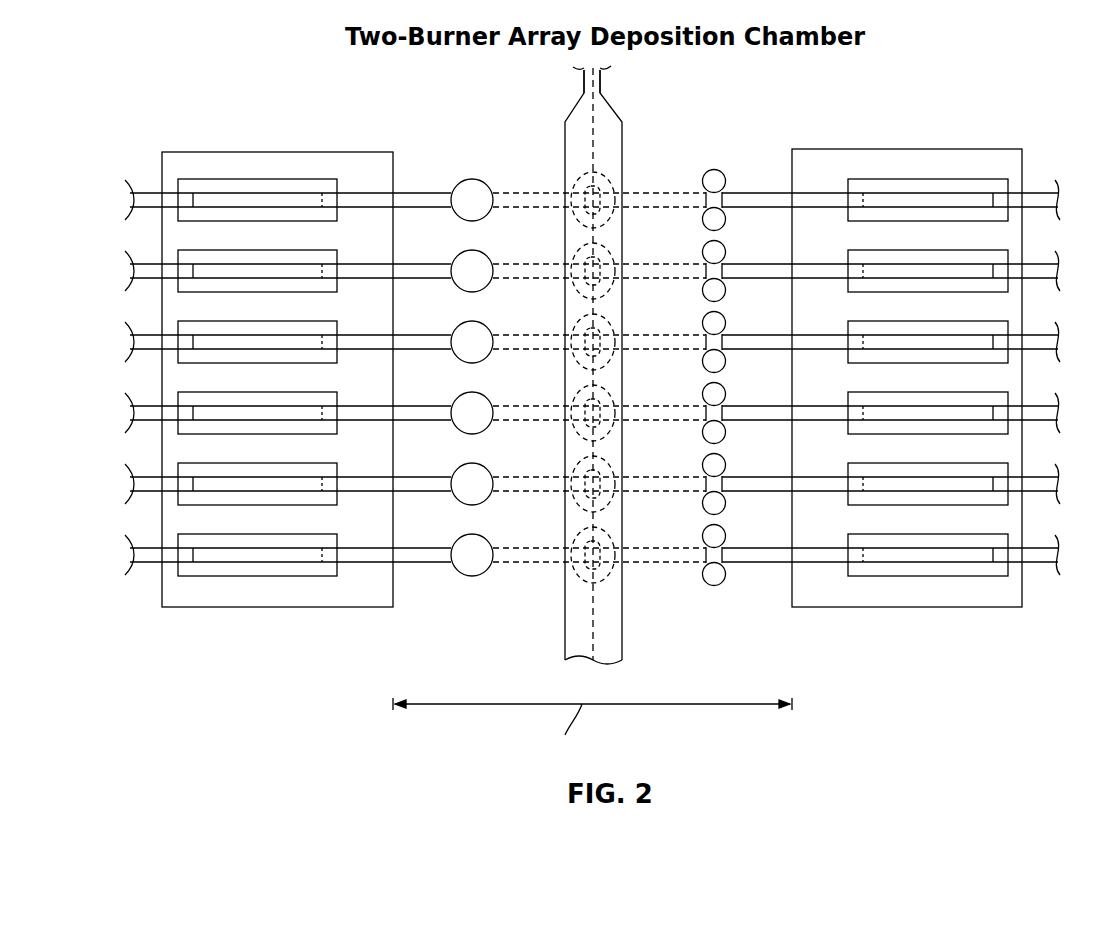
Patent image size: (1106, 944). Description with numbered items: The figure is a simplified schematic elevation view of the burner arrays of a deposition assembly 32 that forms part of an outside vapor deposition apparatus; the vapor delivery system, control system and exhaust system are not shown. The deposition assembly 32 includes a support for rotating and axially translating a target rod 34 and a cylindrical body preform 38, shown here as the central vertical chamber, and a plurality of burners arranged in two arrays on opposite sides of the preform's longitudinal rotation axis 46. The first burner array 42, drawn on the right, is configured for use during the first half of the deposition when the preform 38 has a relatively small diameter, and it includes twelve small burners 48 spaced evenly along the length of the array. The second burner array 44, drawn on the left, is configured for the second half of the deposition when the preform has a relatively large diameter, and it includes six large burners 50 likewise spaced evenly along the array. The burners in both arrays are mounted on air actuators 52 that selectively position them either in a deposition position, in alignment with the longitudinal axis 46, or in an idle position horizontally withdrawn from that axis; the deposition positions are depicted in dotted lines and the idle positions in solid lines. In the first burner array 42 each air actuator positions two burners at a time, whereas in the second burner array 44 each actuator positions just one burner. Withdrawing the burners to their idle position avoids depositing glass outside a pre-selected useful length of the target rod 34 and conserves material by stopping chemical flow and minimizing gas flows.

The deposition assembly 32 is at (188, 84).
The target rod 34 is at (584, 82).
The cylindrical body preform 38 is at (622, 122).
The first burner array 42 is at (840, 149).
The second burner array 44 is at (210, 152).
The longitudinal rotation axis 46 is at (593, 641).
The small burners 48 is at (714, 582).
The large burners 50 is at (472, 578).
The air actuators 52 is at (222, 578).